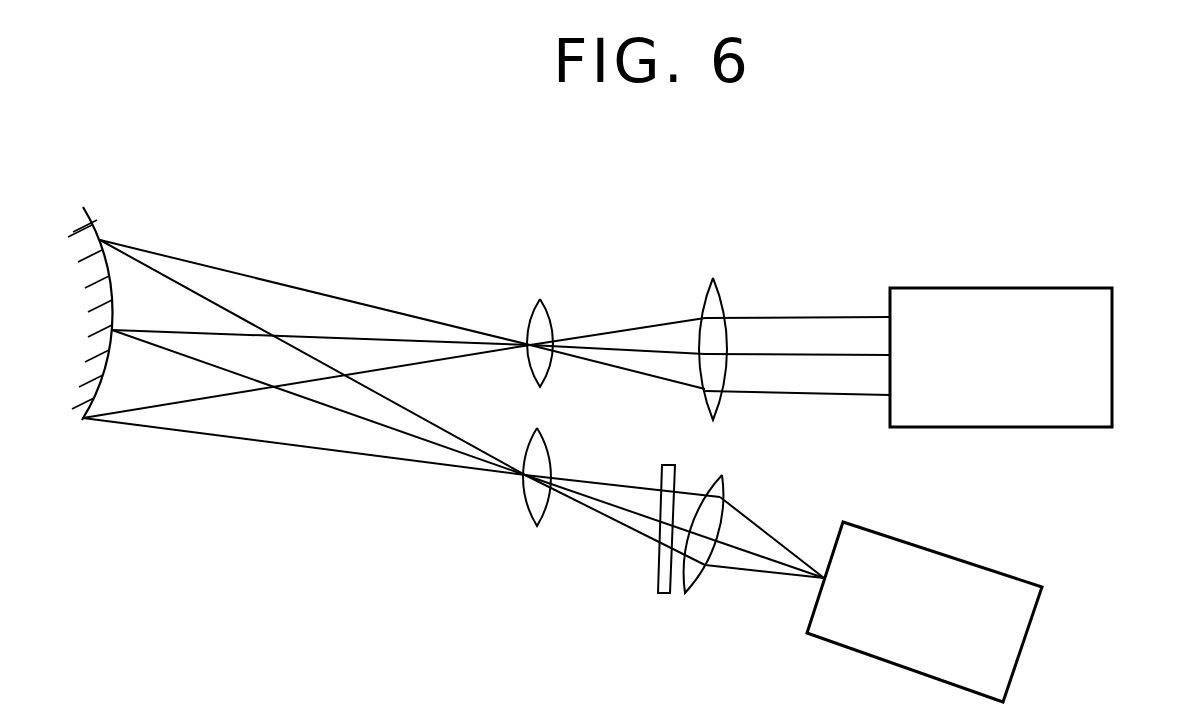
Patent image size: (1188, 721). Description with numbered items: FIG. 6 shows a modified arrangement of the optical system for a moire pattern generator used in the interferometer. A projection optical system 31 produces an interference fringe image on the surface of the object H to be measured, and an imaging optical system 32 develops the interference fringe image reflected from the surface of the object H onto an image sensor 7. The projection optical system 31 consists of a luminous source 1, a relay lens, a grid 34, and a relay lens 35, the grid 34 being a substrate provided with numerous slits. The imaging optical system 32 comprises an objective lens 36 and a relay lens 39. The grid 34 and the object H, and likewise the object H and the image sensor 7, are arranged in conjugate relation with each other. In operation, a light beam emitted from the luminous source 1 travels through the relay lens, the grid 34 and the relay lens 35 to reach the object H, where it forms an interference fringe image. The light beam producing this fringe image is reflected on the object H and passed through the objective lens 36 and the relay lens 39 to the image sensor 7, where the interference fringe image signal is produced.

The luminous source 1 is at (1033, 582).
The image sensor 7 is at (1112, 358).
The projection optical system 31 is at (650, 535).
The imaging optical system 32 is at (695, 308).
The grid 34 is at (667, 594).
The relay lens 35 is at (528, 517).
The objective lens 36 is at (532, 313).
The relay lens 39 is at (720, 293).
The object H is at (93, 229).